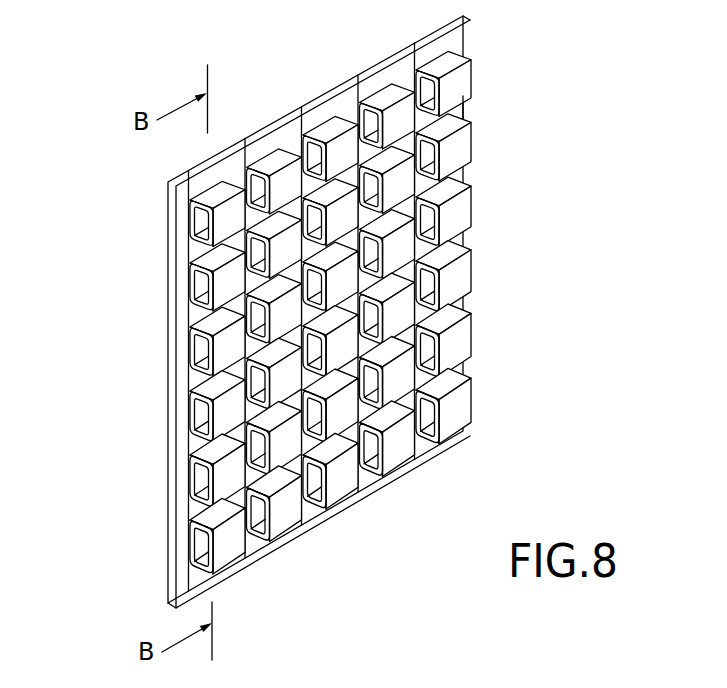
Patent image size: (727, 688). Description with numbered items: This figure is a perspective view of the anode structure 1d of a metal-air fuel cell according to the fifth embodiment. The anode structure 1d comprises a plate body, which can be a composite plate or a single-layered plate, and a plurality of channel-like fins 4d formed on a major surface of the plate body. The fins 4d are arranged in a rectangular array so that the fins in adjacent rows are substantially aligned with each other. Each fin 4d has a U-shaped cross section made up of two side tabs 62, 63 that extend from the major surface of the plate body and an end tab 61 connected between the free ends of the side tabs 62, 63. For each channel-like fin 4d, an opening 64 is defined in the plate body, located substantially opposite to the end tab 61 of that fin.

The anode structure 1d is at (167, 307).
The channel-like fin 4d is at (460, 89).
The end tab 61 is at (463, 77).
The side tab 62 is at (450, 60).
The side tab 63 is at (463, 110).
The opening 64 is at (417, 85).